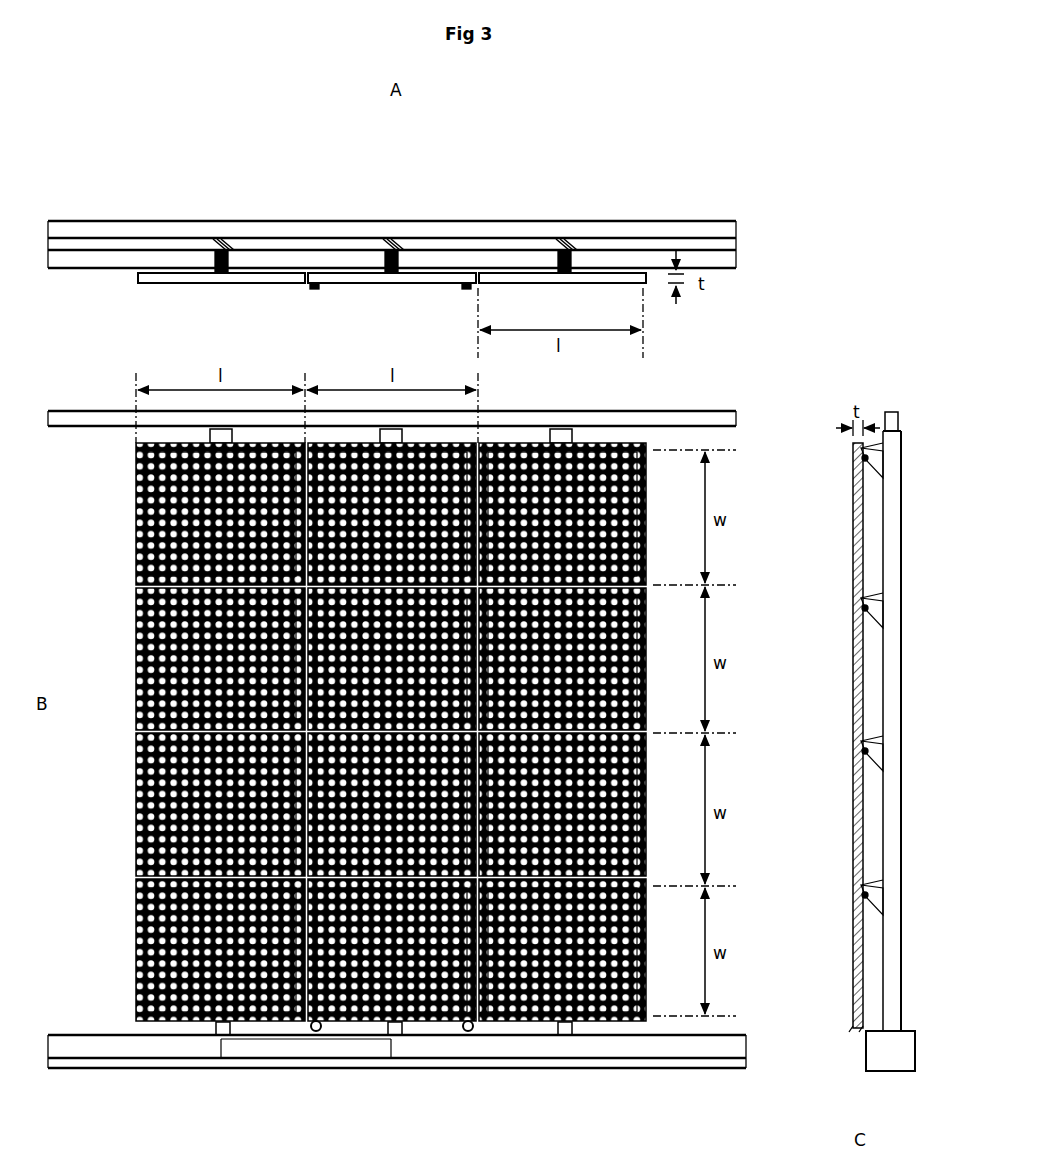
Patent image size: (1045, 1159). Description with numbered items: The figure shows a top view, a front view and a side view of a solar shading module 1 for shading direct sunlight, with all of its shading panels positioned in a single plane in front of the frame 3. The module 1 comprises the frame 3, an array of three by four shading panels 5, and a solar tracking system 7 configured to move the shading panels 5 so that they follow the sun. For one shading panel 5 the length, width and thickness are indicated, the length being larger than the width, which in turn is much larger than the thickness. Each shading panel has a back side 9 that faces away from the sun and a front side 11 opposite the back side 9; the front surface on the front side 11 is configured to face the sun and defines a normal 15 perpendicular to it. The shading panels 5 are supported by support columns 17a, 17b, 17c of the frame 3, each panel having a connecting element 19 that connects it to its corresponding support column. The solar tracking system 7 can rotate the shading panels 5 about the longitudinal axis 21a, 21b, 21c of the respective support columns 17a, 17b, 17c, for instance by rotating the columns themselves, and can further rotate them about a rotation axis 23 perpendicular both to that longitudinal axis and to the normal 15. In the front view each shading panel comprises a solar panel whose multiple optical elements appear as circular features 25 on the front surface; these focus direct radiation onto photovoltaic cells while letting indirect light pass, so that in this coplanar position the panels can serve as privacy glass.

In FIG. 3B, the solar shading module 1 is at (764, 380).
In FIG. 3A, the frame 3 is at (698, 238).
In FIG. 3B, the frame 3 is at (640, 402).
In FIG. 3C, the frame 3 is at (893, 410).
In FIG. 3A, the shading panel 5 is at (256, 270).
In FIG. 3B, the shading panel 5 is at (150, 514).
In FIG. 3C, the shading panel 5 is at (845, 492).
In FIG. 3B, the solar tracking system 7 is at (612, 1052).
In FIG. 3C, the solar tracking system 7 is at (900, 1048).
In FIG. 3C, the back side 9 is at (853, 532).
In FIG. 3C, the front side 11 is at (840, 546).
In FIG. 3A, the normal 15 is at (210, 266).
In FIG. 3C, the normal 15 is at (840, 788).
In FIG. 3A, the support column 17a is at (553, 228).
In FIG. 3A, the support column 17b is at (380, 228).
In FIG. 3A, the support column 17c is at (207, 228).
In FIG. 3C, the connecting element 19 is at (868, 457).
In FIG. 3A, the longitudinal axis 21a is at (557, 238).
In FIG. 3A, the longitudinal axis 21b is at (384, 238).
In FIG. 3A, the longitudinal axis 21c is at (212, 238).
In FIG. 3C, the rotation axis 23 is at (857, 450).
In FIG. 3B, the circular features 25 is at (148, 841).